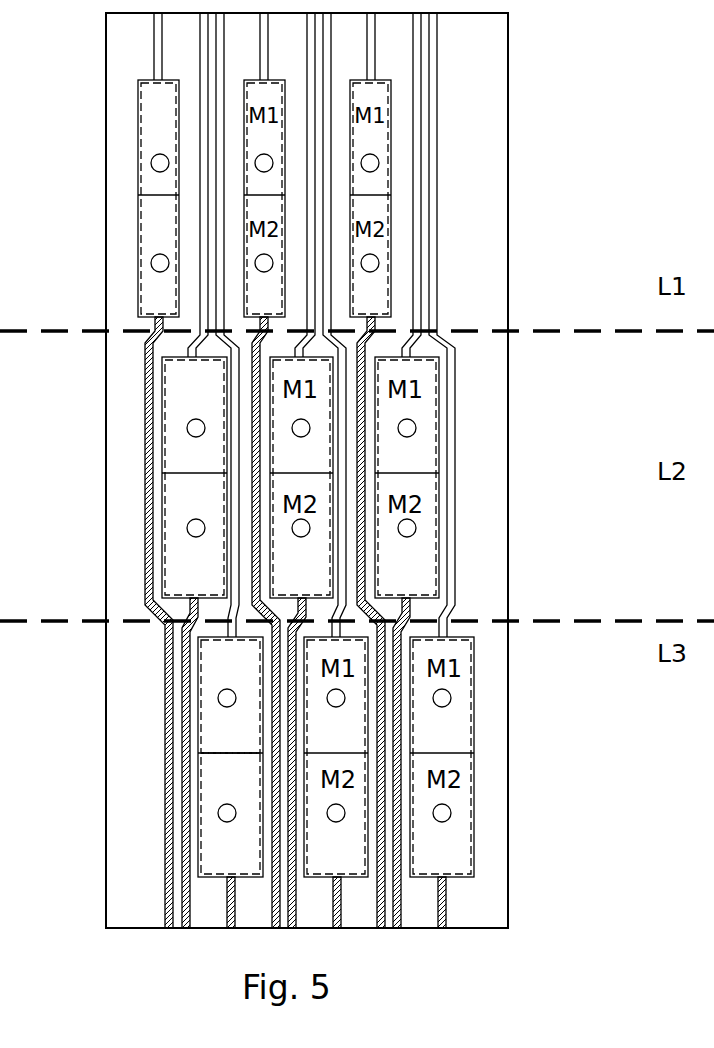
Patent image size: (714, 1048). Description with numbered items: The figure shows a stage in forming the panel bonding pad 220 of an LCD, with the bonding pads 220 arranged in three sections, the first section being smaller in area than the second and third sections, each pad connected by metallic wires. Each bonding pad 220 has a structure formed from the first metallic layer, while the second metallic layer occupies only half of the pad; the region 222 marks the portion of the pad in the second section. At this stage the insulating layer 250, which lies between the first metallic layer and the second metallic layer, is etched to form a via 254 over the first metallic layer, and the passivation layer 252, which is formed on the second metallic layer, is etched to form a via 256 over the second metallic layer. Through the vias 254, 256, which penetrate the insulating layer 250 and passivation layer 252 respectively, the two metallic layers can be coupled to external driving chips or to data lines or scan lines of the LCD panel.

The panel bonding pad 220 is at (135, 538).
The memory cell 222 is at (187, 453).
The insulating layer 250 is at (200, 678).
The passivation layer 252 is at (200, 767).
The via 254 is at (218, 700).
The via 256 is at (218, 813).